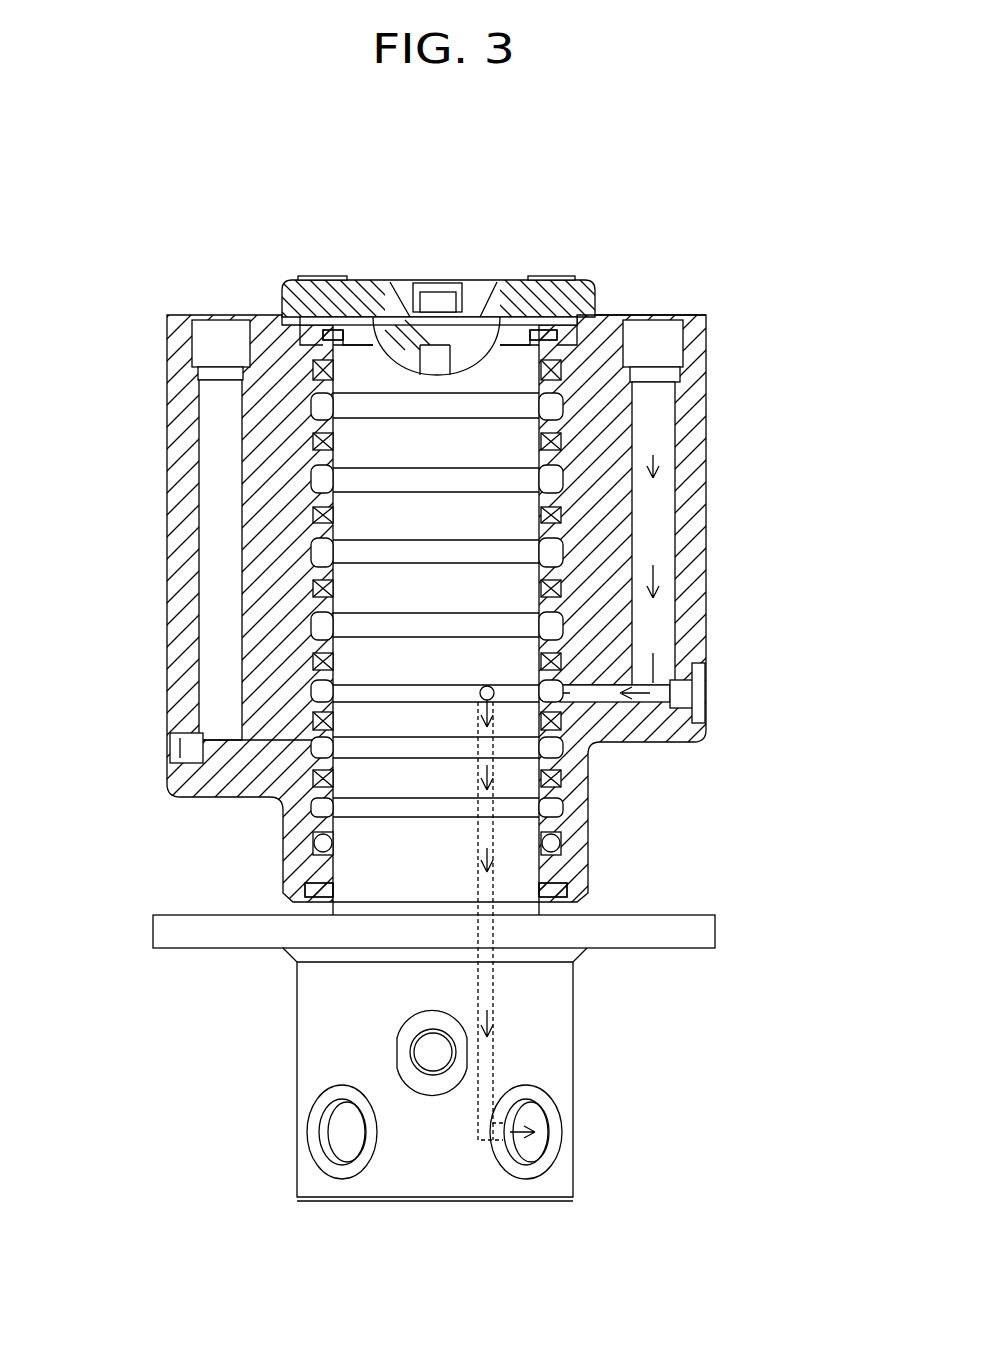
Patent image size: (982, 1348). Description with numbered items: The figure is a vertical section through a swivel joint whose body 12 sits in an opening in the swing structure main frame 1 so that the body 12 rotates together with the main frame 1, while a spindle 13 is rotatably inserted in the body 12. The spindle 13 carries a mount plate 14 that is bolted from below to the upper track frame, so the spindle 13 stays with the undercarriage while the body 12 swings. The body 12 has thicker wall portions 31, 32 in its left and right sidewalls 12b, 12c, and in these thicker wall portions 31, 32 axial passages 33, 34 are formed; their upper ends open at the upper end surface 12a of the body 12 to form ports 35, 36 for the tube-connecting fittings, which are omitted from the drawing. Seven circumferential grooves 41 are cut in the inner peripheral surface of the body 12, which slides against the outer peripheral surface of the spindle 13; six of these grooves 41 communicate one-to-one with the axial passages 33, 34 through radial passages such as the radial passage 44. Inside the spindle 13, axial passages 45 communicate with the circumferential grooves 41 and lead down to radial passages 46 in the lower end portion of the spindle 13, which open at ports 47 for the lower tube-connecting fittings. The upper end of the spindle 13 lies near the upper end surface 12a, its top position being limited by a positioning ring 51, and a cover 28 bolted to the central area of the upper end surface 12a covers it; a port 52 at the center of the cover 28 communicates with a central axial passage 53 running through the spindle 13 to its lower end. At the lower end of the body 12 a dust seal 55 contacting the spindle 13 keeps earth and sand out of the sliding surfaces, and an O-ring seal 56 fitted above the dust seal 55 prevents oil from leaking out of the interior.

The swing structure main frame 1 is at (135, 544).
The body 12 is at (718, 463).
The upper end surface 12a is at (658, 300).
The sidewall 12b is at (167, 697).
The sidewall 12c is at (707, 600).
The spindle 13 is at (285, 1002).
The mount plate 14 is at (705, 933).
The cover 28 is at (502, 287).
The thicker wall portion 31 is at (267, 588).
The thicker wall portion 32 is at (600, 630).
The axial passage 33 is at (220, 500).
The axial passage 34 is at (653, 508).
The port 35 is at (218, 345).
The port 36 is at (670, 345).
The circumferential groove 41 is at (560, 406).
The radial passage 44 is at (597, 697).
The axial passage 45 is at (493, 990).
The radial passage 46 is at (500, 1142).
The port 47 is at (433, 1050).
The positioning ring 51 is at (318, 276).
The port 52 is at (438, 305).
The axial passage 53 is at (433, 357).
The dust seal 55 is at (590, 883).
The O-ring seal 56 is at (313, 844).